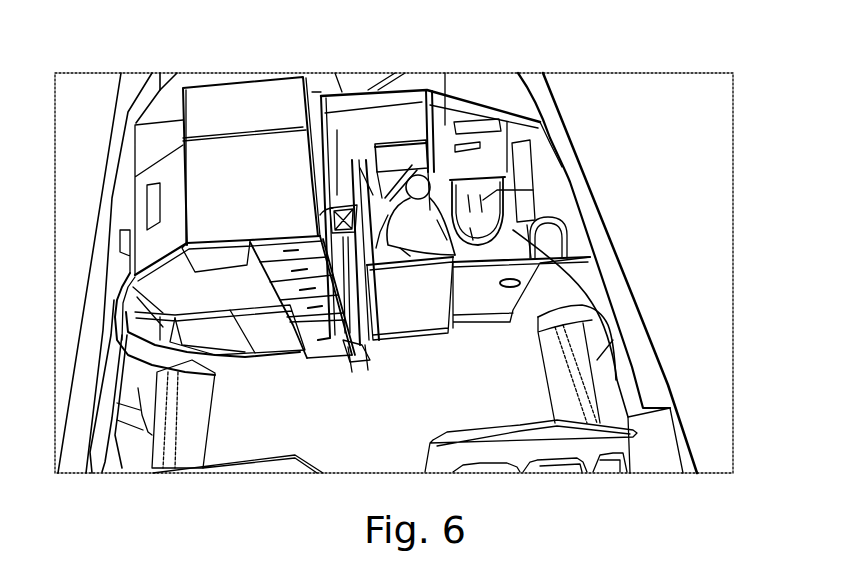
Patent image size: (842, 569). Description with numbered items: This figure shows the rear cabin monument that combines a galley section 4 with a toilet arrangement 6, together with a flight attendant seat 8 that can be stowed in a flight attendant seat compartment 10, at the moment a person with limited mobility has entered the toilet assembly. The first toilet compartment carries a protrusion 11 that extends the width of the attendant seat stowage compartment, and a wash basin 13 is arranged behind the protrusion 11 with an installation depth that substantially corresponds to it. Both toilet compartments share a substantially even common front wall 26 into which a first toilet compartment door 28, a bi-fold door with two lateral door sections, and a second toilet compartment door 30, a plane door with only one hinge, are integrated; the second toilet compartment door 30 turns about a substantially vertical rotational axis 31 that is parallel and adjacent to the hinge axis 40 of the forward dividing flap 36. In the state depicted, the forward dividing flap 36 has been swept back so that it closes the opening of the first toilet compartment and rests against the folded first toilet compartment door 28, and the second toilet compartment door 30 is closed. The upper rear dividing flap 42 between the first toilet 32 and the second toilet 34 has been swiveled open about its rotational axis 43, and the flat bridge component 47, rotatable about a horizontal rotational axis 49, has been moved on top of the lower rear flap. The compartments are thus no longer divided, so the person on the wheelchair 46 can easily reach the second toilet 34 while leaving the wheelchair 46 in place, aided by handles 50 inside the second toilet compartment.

The galley section 4 is at (305, 65).
The toilet arrangement 6 is at (323, 46).
The flight attendant seat 8 is at (375, 350).
The flight attendant seat compartment 10 is at (370, 350).
The protrusion 11 is at (327, 148).
The wash basin 13 is at (327, 186).
The front wall 26 is at (650, 340).
The first toilet compartment door 28 is at (330, 228).
The second toilet compartment door 30 is at (460, 320).
The rotational axis 31 is at (474, 295).
The toilet 32 is at (372, 190).
The toilet 34 is at (533, 191).
The forward dividing flap 36 is at (405, 305).
The hinge axis 40 is at (550, 293).
The upper rear dividing flap 42 is at (408, 160).
The rotational axis 43 is at (465, 140).
The wheelchair 46 is at (377, 163).
The bridge component 47 is at (490, 148).
The rotational axis 49 is at (516, 180).
The handles 50 is at (568, 207).